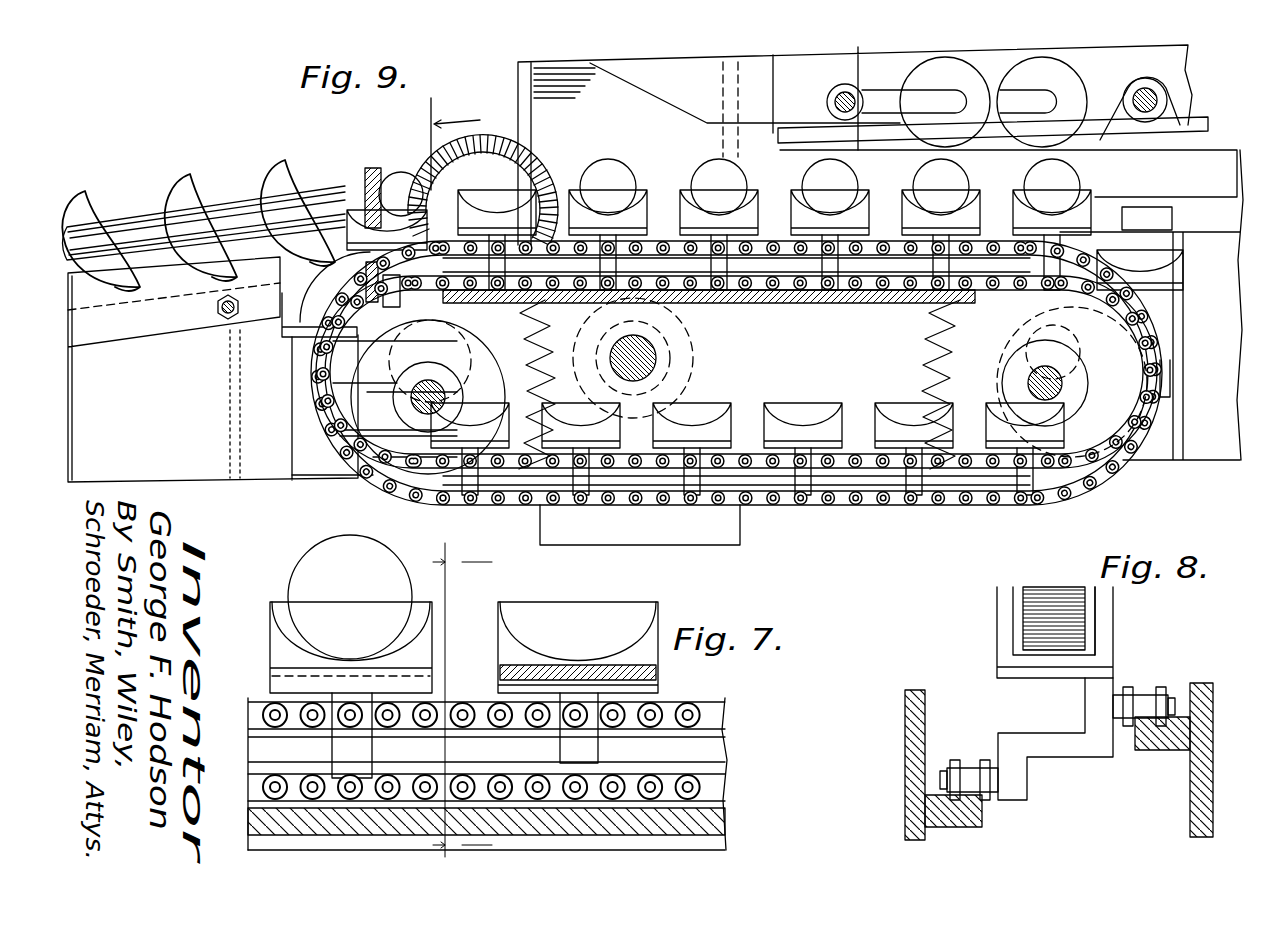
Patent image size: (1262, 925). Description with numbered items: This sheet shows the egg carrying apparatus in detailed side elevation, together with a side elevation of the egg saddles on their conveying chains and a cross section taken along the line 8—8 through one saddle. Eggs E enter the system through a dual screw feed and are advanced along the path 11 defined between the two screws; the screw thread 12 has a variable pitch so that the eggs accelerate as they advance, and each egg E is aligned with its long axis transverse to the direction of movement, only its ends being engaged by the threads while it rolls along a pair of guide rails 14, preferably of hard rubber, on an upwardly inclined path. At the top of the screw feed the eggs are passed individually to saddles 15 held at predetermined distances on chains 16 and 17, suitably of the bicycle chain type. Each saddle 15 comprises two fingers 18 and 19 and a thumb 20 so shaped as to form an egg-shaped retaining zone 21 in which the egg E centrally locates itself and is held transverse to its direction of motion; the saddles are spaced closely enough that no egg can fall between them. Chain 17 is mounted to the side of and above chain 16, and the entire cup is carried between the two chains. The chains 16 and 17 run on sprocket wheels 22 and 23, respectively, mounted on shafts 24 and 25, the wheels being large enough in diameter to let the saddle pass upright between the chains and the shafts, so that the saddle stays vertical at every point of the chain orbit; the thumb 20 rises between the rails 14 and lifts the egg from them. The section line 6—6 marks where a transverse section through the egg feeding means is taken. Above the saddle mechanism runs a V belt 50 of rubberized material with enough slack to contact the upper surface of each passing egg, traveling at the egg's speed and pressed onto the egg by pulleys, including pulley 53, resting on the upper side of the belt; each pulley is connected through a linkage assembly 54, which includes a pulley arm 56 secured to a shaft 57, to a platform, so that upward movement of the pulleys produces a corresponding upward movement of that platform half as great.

In FIG. 9, the section line 6— 6 is at (455, 144).
In FIG. 7, the section line 8— 8 is at (462, 700).
In FIG. 9, the path 11 is at (139, 208).
In FIG. 9, the screw thread 12 is at (283, 160).
In FIG. 9, the guide rails 14 is at (188, 280).
In FIG. 9, the saddle 15 is at (355, 208).
In FIG. 7, the saddle 15 is at (525, 628).
In FIG. 8, the saddle 15 is at (1126, 647).
In FIG. 9, the chain 16 is at (778, 292).
In FIG. 7, the chain 16 is at (692, 785).
In FIG. 8, the chain 16 is at (960, 765).
In FIG. 9, the chain 17 is at (852, 292).
In FIG. 7, the chain 17 is at (690, 700).
In FIG. 8, the chain 17 is at (1162, 690).
In FIG. 7, the finger 18 is at (648, 620).
In FIG. 8, the finger 18 is at (1108, 607).
In FIG. 7, the finger 19 is at (410, 646).
In FIG. 8, the finger 19 is at (1002, 612).
In FIG. 7, the thumb 20 is at (280, 630).
In FIG. 8, the thumb 20 is at (1048, 595).
In FIG. 7, the egg-shaped retaining zone 21 is at (350, 650).
In FIG. 9, the sprocket wheel 22 is at (300, 405).
In FIG. 9, the sprocket wheel 23 is at (548, 320).
In FIG. 9, the shaft 24 is at (468, 400).
In FIG. 9, the shaft 25 is at (472, 360).
In FIG. 9, the V belt 50 is at (1103, 135).
In FIG. 9, the pulley 53 is at (1055, 64).
In FIG. 9, the linkage assembly 54 is at (915, 72).
In FIG. 9, the pulley arm 56 is at (1068, 95).
In FIG. 9, the shaft 57 is at (1152, 92).
In FIG. 9, the egg E is at (400, 172).